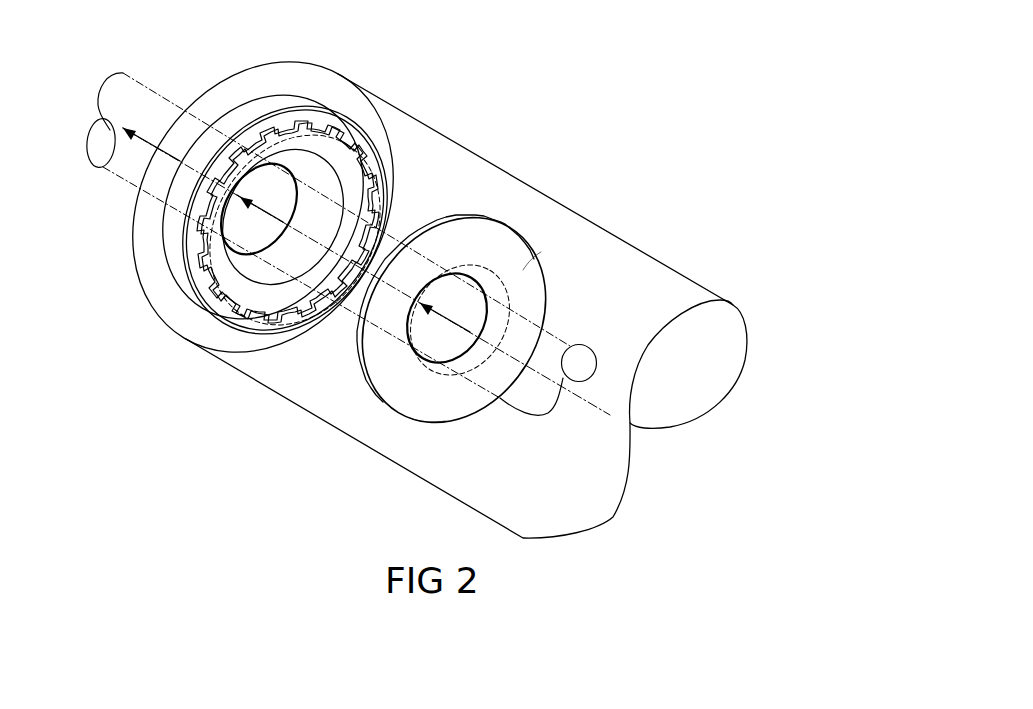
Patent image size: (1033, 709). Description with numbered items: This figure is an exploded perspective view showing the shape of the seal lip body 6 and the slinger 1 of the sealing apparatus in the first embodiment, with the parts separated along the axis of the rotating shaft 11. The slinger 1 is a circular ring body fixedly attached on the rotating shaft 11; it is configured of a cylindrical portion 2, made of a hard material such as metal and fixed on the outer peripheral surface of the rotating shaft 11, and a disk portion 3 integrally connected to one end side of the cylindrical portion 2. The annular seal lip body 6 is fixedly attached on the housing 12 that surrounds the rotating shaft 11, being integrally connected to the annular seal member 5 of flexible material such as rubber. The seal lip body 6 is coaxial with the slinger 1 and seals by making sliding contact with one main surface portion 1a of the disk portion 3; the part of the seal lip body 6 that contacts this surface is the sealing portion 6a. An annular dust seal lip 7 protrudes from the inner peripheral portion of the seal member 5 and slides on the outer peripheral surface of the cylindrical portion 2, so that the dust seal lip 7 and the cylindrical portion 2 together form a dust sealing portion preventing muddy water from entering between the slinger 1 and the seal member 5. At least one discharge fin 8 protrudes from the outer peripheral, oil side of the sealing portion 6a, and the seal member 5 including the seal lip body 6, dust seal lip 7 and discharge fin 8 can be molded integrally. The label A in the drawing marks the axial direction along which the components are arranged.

The slinger 1 is at (547, 307).
The one main surface portion 1a is at (523, 270).
The cylindrical portion 2 is at (375, 362).
The disk portion 3 is at (428, 412).
The seal member 5 is at (338, 112).
The seal lip body 6 is at (292, 326).
The sealing portion 6a is at (240, 316).
The dust seal lip 7 is at (222, 238).
The discharge fin 8 is at (270, 118).
The rotating shaft 11 is at (563, 337).
The housing 12 is at (497, 168).
The axis A is at (597, 407).